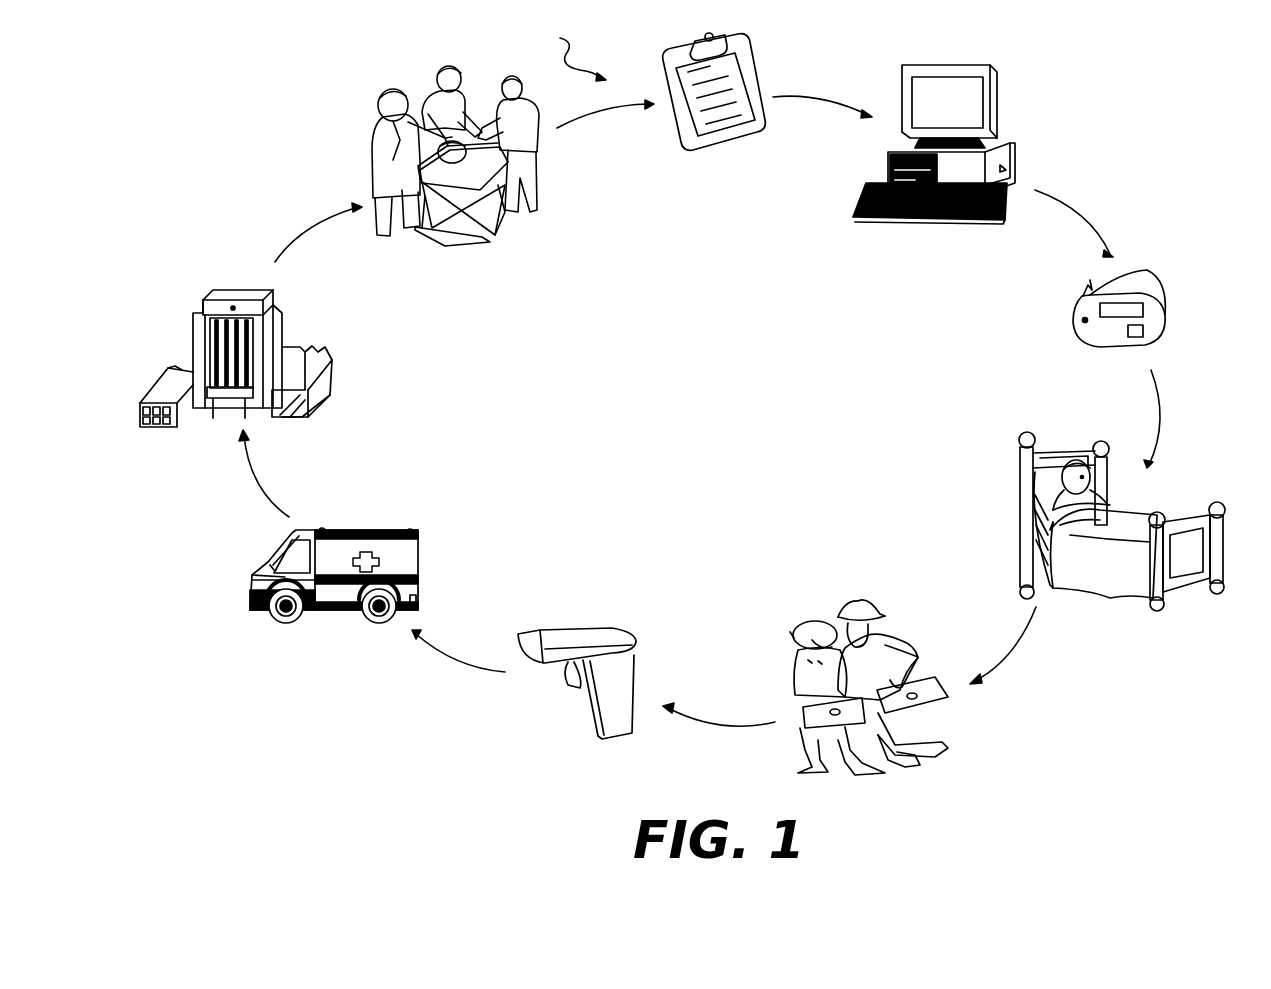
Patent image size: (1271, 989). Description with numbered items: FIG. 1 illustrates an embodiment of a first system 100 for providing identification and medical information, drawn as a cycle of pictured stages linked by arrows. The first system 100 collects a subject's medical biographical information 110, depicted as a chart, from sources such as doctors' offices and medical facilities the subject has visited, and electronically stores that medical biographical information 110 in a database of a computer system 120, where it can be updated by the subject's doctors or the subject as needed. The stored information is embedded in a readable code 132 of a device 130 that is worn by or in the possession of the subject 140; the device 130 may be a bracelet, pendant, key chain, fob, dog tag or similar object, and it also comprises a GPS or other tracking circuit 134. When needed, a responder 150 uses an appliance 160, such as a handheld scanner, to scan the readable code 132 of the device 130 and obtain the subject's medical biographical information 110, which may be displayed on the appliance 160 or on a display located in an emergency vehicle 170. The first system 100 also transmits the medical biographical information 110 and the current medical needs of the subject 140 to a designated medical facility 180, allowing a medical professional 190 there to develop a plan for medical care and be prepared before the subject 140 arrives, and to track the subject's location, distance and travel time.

The first system 100 is at (491, 42).
The medical biographical information 110 is at (736, 148).
The computer system 120 is at (905, 217).
The device 130 is at (1078, 330).
The readable code 132 is at (1143, 312).
The tracking circuit 134 is at (1145, 333).
The subject 140 is at (1020, 455).
The responder 150 is at (858, 600).
The appliance 160 is at (605, 624).
The emergency vehicle 170 is at (420, 558).
The medical facility 180 is at (327, 362).
The medical professional 190 is at (521, 203).